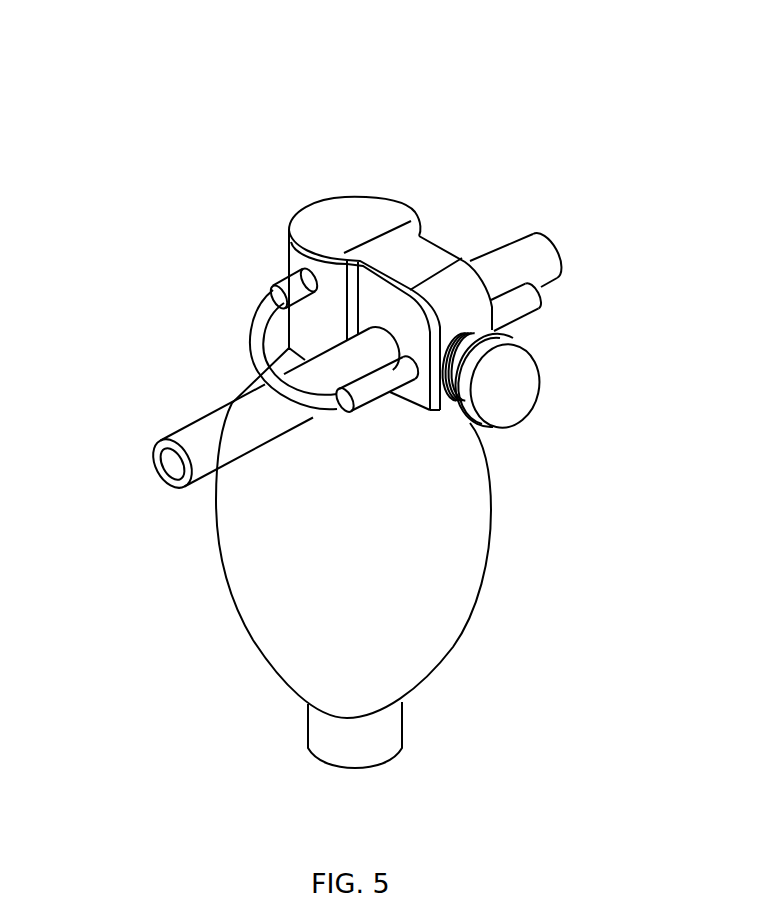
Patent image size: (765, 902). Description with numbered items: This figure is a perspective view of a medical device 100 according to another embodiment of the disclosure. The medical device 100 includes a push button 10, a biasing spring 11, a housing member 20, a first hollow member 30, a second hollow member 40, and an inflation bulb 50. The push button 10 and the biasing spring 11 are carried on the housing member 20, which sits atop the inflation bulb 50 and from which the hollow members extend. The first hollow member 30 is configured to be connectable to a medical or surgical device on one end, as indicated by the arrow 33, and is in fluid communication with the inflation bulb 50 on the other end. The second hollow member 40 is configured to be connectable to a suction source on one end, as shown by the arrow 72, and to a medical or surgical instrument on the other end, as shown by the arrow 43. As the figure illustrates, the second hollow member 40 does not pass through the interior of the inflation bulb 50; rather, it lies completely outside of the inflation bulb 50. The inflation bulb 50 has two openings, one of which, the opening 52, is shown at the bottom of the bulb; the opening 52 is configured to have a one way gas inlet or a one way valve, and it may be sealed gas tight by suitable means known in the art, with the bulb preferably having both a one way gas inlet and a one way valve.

The medical device 100 is at (232, 130).
The housing member 20 is at (380, 204).
The biasing spring 11 is at (480, 330).
The push button 10 is at (520, 397).
The arrow 43 is at (619, 209).
The arrow 33 is at (547, 287).
The second hollow member 40 is at (181, 430).
The arrow 72 is at (148, 482).
The first hollow member 30 is at (375, 393).
The inflation bulb 50 is at (367, 565).
The opening 52 is at (402, 730).